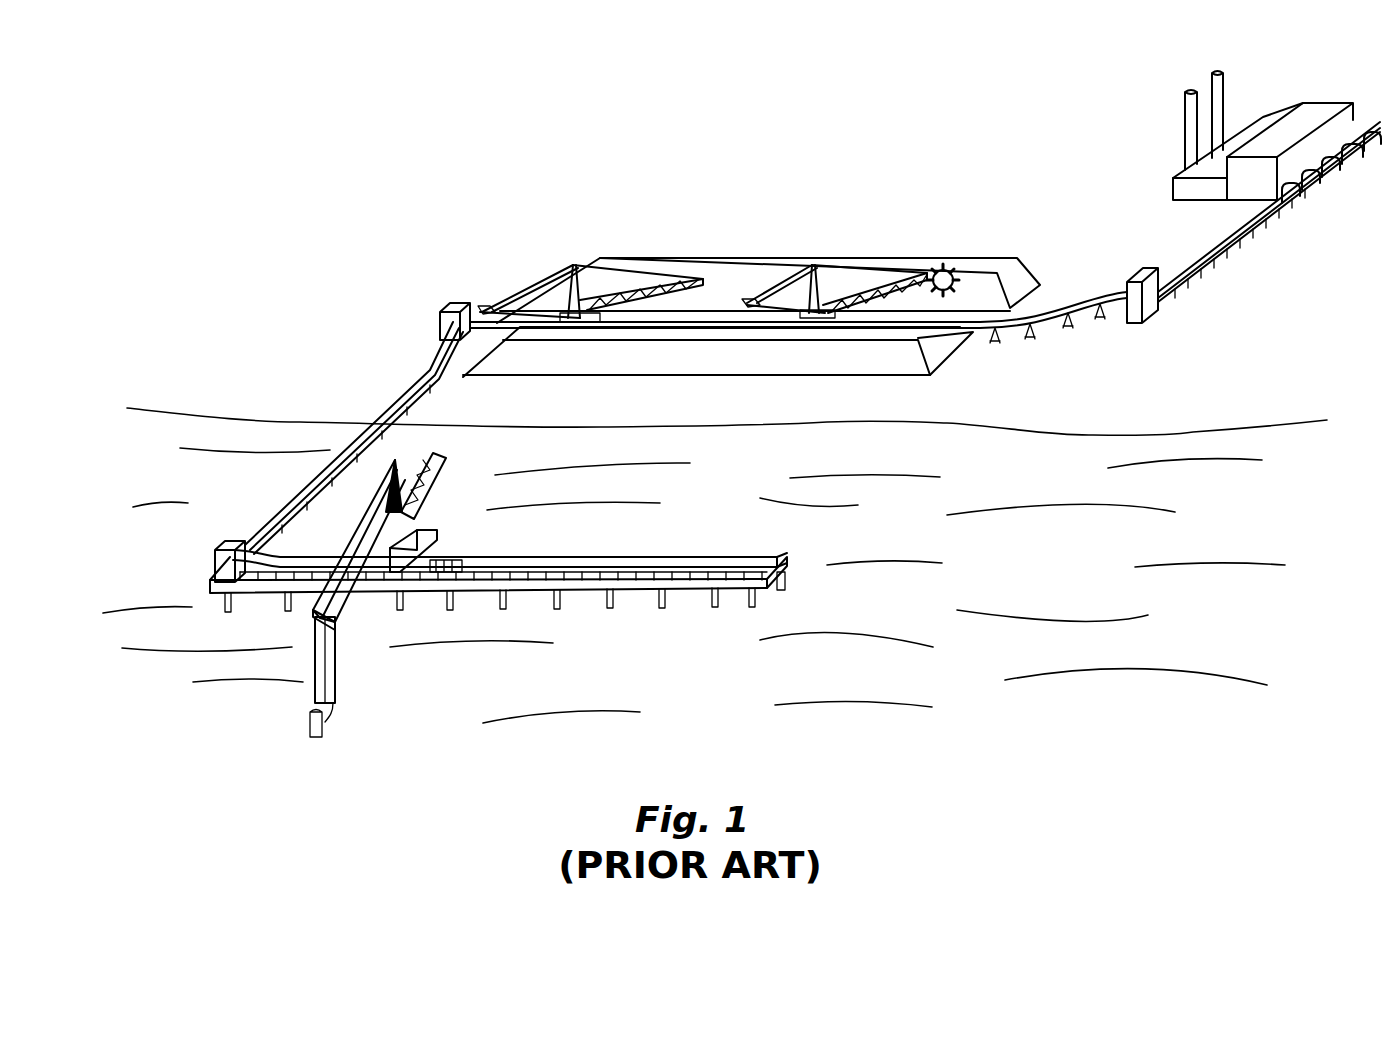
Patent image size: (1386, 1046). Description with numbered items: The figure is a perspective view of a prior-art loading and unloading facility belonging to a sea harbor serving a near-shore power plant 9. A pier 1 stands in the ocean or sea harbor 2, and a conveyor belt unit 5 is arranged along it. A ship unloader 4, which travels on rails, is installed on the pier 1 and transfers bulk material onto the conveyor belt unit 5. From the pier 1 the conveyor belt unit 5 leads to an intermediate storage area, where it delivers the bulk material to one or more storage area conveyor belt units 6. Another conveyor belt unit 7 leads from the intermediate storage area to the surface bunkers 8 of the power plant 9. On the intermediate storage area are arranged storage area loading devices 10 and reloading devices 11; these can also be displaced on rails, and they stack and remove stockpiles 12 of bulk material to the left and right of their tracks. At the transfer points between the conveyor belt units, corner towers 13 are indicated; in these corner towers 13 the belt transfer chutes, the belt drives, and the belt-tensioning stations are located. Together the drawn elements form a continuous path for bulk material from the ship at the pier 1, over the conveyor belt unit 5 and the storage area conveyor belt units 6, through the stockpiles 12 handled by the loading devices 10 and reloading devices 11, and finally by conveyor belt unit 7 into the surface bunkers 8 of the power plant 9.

The pier 1 is at (695, 600).
The ocean or sea harbor 2 is at (531, 697).
The ship unloader 4 is at (330, 665).
The conveyor belt unit 5 is at (393, 420).
The storage area conveyor belt unit 6 is at (724, 285).
The conveyor belt unit 7 is at (1232, 242).
The surface bunkers 8 is at (1327, 163).
The power plant 9 is at (1318, 108).
The storage area loading device 10 is at (656, 272).
The reloading device 11 is at (938, 268).
The stockpile 12 is at (778, 265).
The corner tower 13 is at (440, 313).